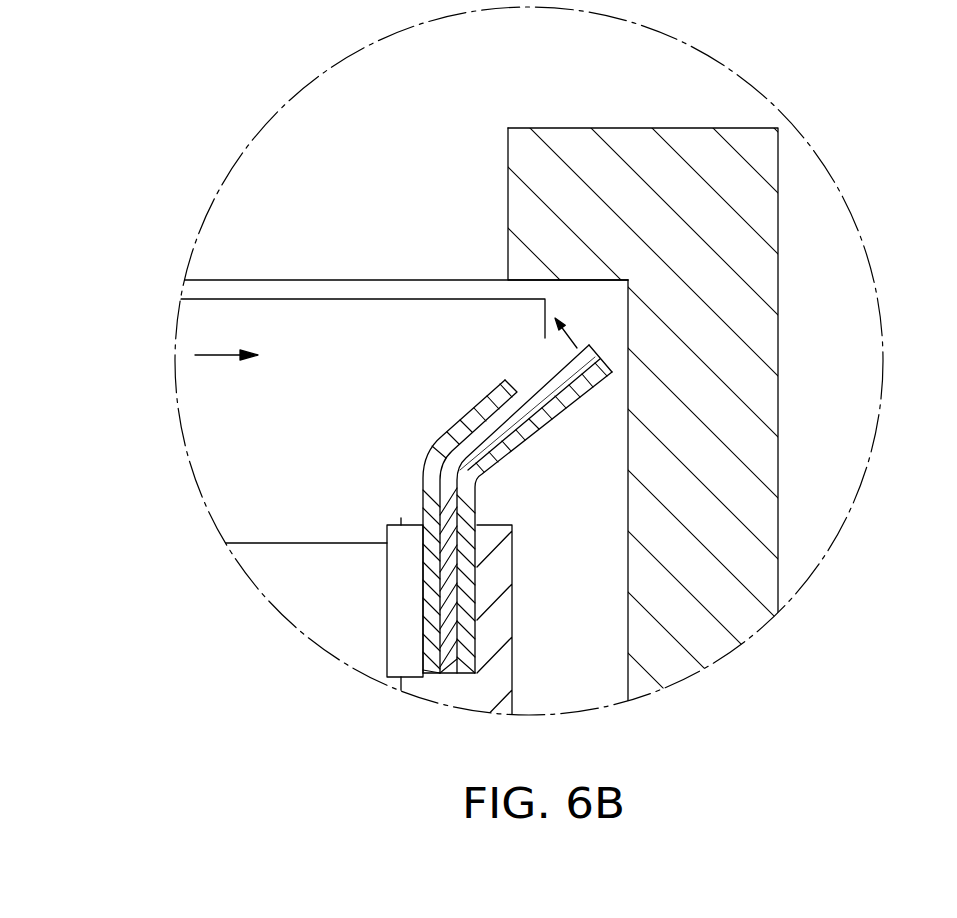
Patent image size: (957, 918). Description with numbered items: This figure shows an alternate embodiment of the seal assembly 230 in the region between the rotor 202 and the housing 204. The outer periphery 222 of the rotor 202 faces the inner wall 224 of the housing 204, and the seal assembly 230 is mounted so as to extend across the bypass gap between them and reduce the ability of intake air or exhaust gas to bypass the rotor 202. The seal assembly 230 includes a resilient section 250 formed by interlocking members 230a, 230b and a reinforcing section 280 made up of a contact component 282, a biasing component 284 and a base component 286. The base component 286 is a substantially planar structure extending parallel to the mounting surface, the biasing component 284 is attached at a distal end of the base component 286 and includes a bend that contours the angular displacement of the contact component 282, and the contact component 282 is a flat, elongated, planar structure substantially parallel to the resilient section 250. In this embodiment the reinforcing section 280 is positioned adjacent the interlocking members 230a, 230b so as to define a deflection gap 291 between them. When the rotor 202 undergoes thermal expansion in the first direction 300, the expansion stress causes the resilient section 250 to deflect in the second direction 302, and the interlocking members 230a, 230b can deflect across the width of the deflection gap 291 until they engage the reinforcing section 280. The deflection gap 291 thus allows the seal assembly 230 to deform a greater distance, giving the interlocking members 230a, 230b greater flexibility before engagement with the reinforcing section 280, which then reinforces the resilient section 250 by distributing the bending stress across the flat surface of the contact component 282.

The rotor 202 is at (363, 322).
The housing 204 is at (765, 518).
The outer periphery 222 is at (513, 580).
The inner wall 224 is at (628, 547).
The seal assembly 230 is at (614, 342).
The interlocking member 230a is at (561, 366).
The interlocking member 230b is at (527, 441).
The resilient section 250 is at (585, 435).
The reinforcing section 280 is at (462, 418).
The contact component 282 is at (487, 413).
The biasing component 284 is at (405, 468).
The base component 286 is at (433, 585).
The deflection gap 291 is at (532, 383).
The first direction 300 is at (210, 353).
The second direction 302 is at (575, 345).